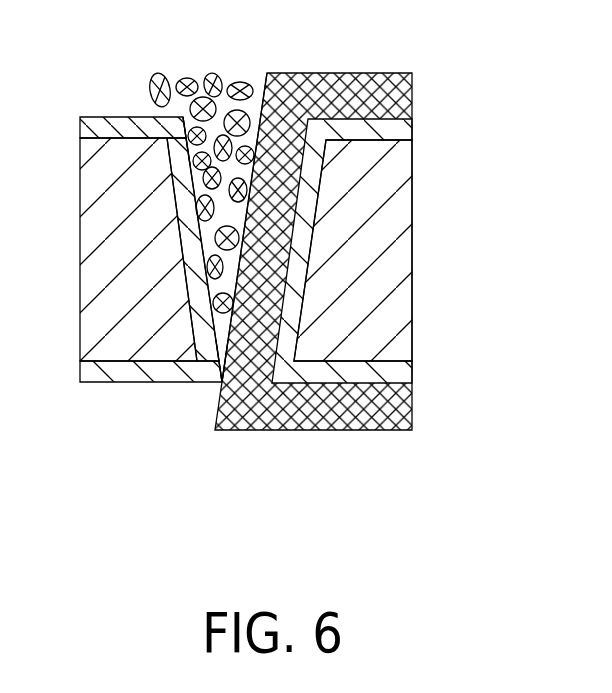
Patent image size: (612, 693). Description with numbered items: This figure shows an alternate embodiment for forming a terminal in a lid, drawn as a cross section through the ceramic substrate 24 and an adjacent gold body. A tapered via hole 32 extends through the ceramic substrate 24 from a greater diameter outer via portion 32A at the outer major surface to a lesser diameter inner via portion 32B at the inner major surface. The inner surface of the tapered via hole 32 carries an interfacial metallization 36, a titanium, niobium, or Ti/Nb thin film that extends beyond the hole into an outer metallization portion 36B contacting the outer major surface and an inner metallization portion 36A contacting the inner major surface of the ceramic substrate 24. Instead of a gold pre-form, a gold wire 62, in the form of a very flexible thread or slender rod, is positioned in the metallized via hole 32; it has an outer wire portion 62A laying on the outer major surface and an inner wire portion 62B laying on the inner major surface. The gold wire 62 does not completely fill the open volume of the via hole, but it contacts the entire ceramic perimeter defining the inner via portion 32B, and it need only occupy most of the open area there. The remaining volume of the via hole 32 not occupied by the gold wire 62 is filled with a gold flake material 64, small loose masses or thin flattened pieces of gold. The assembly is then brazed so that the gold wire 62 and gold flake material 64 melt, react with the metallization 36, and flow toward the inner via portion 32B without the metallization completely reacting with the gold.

The ceramic substrate 24 is at (107, 303).
The tapered via hole 32 is at (218, 385).
The outer via portion 32A is at (208, 78).
The inner via portion 32B is at (222, 387).
The interfacial metallization 36 is at (193, 250).
The inner metallization portion 36A is at (95, 385).
The outer metallization portion 36B is at (107, 117).
The gold wire 62 is at (355, 255).
The outer wire portion 62A is at (403, 93).
The inner wire portion 62B is at (403, 410).
The gold flake material 64 is at (223, 83).